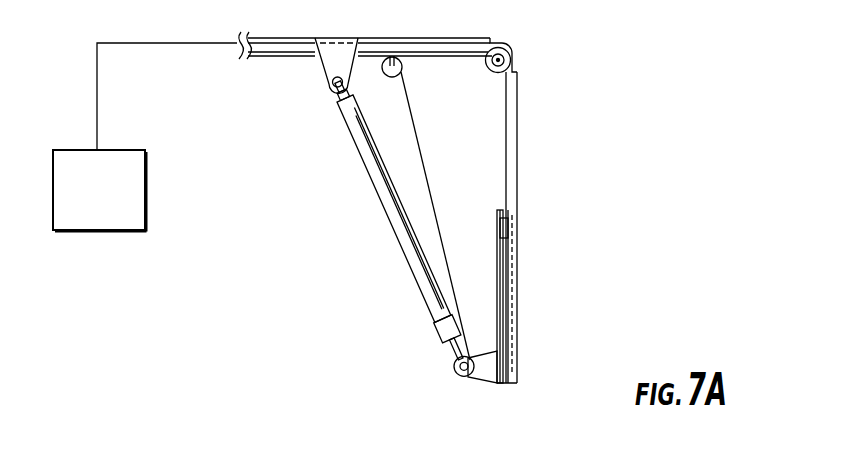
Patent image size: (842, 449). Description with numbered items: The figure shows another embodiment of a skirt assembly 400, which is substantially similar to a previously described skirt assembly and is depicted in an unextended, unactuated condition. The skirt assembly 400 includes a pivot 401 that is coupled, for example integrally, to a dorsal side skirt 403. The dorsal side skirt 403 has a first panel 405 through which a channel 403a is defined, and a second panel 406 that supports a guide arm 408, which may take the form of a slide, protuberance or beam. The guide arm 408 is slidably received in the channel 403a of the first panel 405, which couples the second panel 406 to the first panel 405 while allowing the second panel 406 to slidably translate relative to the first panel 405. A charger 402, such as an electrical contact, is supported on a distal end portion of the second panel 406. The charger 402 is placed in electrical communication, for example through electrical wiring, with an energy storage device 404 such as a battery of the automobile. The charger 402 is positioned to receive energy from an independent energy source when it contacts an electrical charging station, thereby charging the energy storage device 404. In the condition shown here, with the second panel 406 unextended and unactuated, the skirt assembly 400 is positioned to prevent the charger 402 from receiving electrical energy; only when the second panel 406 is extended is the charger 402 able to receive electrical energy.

The skirt assembly 400 is at (612, 244).
The pivot 401 is at (511, 50).
The charger 402 is at (505, 384).
The dorsal side skirt 403 is at (526, 114).
The channel 403a is at (526, 304).
The energy storage device 404 is at (113, 200).
The first panel 405 is at (518, 178).
The second panel 406 is at (497, 214).
The guide arm 408 is at (508, 228).